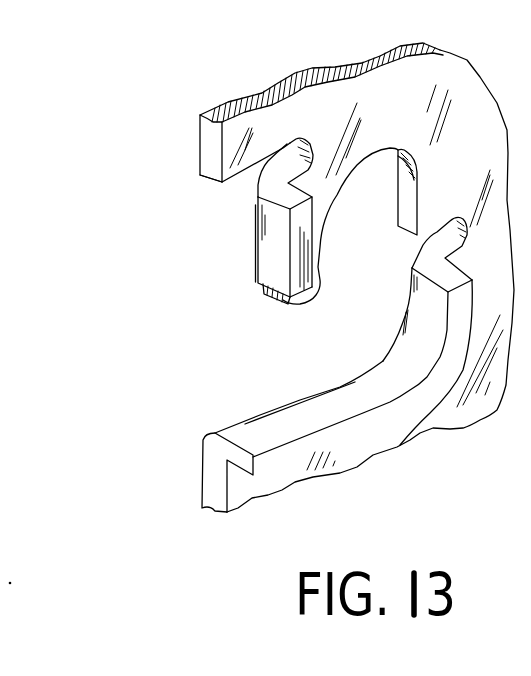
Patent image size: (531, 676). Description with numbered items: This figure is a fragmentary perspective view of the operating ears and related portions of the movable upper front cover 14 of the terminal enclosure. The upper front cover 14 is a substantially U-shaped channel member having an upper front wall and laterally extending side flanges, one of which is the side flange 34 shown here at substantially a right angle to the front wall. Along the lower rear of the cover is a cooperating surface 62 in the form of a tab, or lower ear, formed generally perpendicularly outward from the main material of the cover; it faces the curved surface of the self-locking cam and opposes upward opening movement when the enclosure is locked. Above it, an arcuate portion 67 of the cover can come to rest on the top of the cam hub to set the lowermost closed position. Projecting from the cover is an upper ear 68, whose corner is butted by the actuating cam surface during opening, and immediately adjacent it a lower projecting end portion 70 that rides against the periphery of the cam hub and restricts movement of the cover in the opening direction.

The upper front cover 14 is at (251, 101).
The side flange 34 is at (221, 181).
The cooperating surface 62 is at (363, 417).
The arcuate portion 67 is at (377, 153).
The upper ear 68 is at (275, 256).
The lower projecting end portion 70 is at (302, 290).